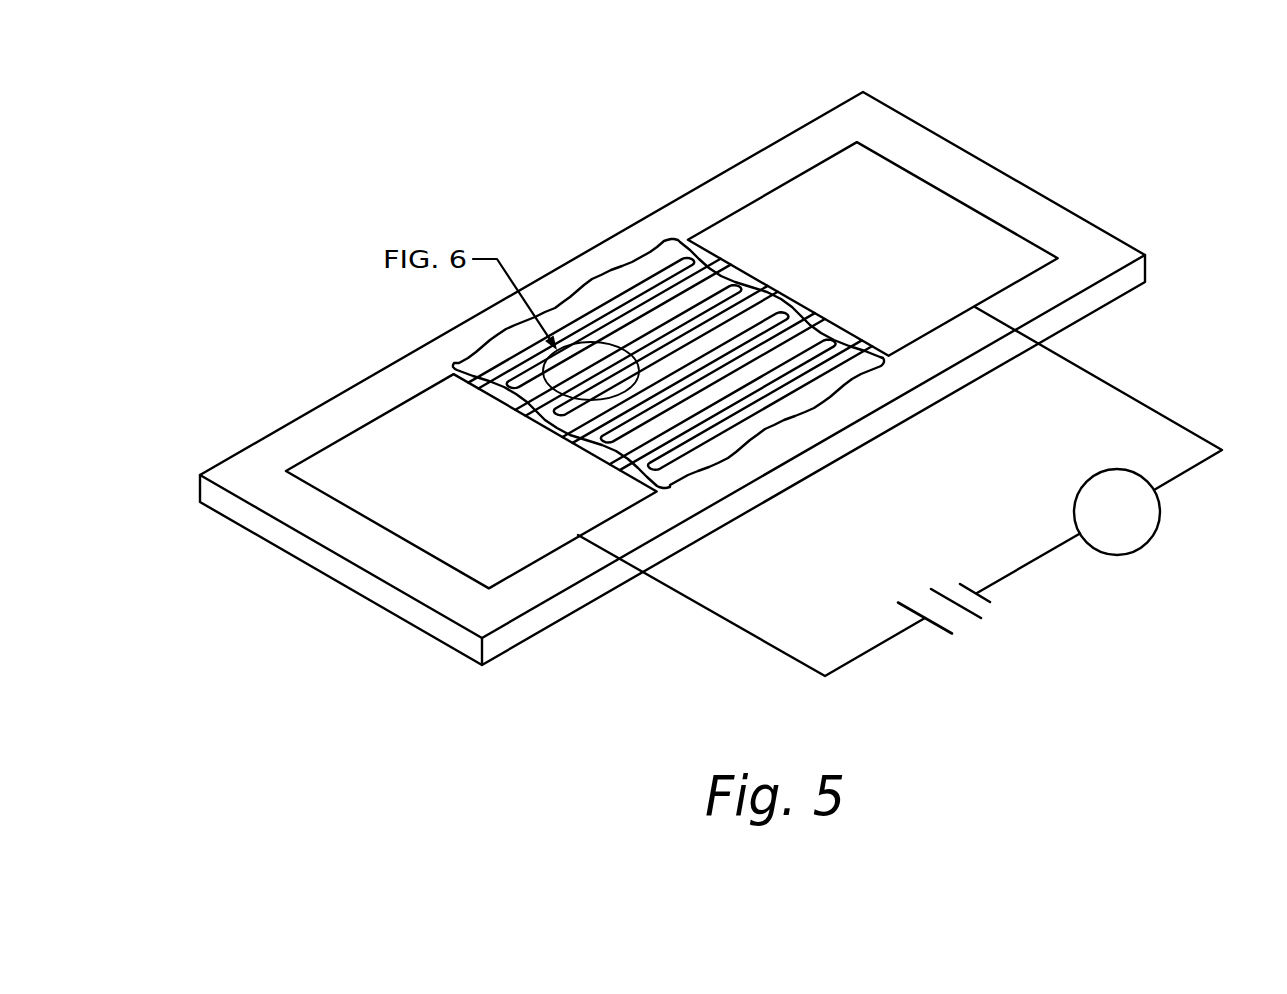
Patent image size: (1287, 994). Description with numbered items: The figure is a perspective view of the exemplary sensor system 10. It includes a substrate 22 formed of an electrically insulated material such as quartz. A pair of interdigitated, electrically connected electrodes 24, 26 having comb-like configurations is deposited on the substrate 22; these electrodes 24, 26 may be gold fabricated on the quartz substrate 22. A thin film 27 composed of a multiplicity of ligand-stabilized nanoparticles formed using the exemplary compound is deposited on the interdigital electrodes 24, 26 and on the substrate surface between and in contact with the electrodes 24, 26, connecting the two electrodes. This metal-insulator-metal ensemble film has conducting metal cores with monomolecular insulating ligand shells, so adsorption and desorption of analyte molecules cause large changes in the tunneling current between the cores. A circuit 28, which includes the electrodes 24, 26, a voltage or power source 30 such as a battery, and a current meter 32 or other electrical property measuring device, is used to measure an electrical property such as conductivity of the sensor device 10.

The sensor system 10 is at (330, 208).
The substrate 22 is at (1072, 227).
The electrode 24 is at (447, 483).
The electrode 26 is at (888, 236).
The thin film 27 is at (640, 255).
The circuit 28 is at (1120, 392).
The voltage or power source 30 is at (997, 622).
The current meter 32 is at (1078, 487).